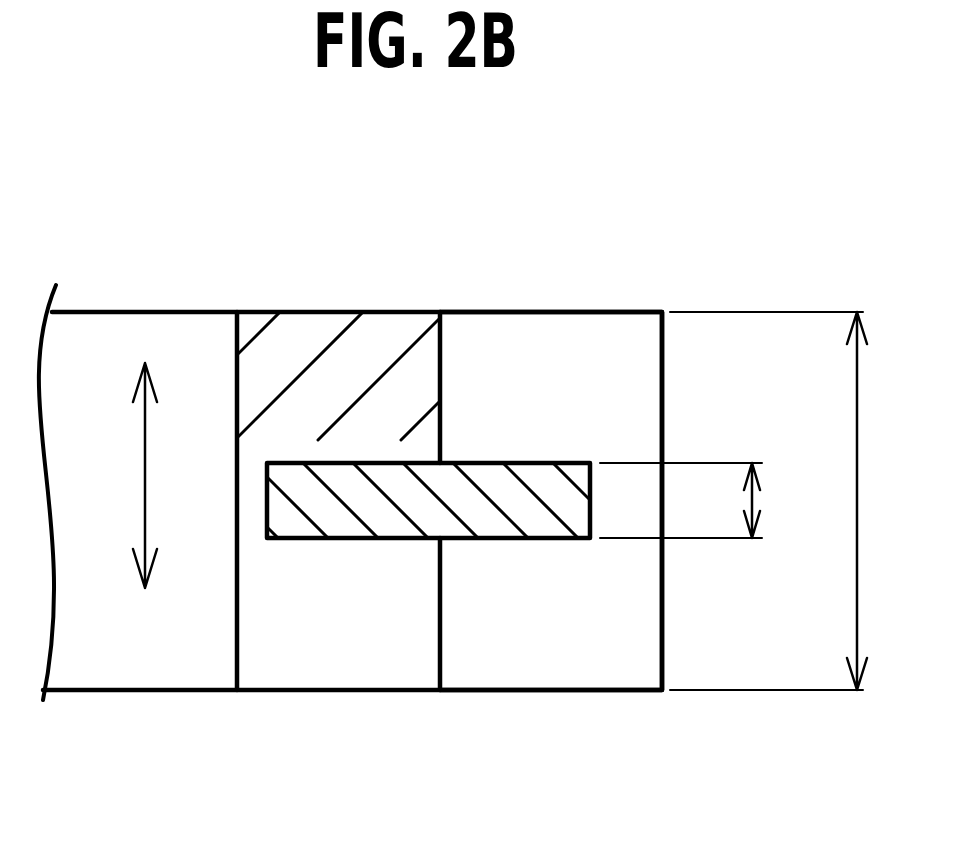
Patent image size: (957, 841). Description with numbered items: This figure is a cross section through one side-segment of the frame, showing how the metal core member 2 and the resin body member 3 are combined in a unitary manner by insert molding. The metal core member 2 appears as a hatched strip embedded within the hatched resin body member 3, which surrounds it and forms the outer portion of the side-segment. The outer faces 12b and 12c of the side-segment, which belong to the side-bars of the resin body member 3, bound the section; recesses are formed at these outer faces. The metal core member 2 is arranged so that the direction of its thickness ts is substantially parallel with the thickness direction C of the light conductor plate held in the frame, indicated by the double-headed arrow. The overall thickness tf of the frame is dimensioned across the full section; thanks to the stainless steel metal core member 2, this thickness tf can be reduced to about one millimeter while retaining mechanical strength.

The resin body member 3 is at (478, 312).
The metal core member 2 is at (522, 513).
The outer face 12b is at (663, 618).
The outer face 12c is at (238, 645).
The thickness direction C is at (145, 513).
The thickness ts is at (681, 500).
The thickness tf is at (768, 501).